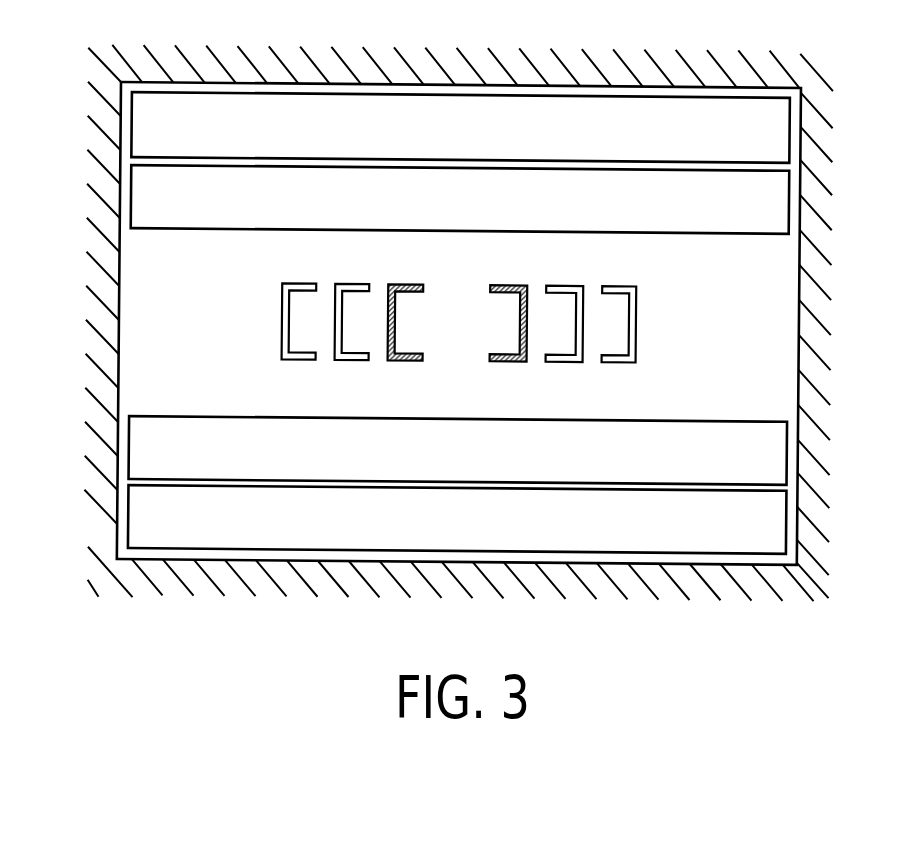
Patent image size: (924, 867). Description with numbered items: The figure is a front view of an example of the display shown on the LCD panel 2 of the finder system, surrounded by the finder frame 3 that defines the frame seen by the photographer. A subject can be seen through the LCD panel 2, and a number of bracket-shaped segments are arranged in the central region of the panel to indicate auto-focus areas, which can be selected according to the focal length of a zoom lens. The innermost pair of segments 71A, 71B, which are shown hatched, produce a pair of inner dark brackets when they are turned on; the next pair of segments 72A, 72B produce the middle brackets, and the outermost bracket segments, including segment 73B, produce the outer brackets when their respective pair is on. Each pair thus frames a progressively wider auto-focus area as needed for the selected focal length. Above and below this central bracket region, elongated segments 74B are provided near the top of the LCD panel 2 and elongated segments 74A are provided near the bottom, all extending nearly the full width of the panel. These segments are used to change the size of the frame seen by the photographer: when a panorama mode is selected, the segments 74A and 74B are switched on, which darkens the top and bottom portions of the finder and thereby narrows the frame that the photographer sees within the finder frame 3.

The LCD panel 2 is at (763, 358).
The finder frame 3 is at (622, 80).
The segment 71A is at (425, 261).
The segment 71B is at (510, 287).
The segment 72A is at (368, 349).
The segment 72B is at (560, 363).
The segment 73B is at (300, 284).
The segment 74A is at (773, 462).
The segment 74B is at (777, 142).